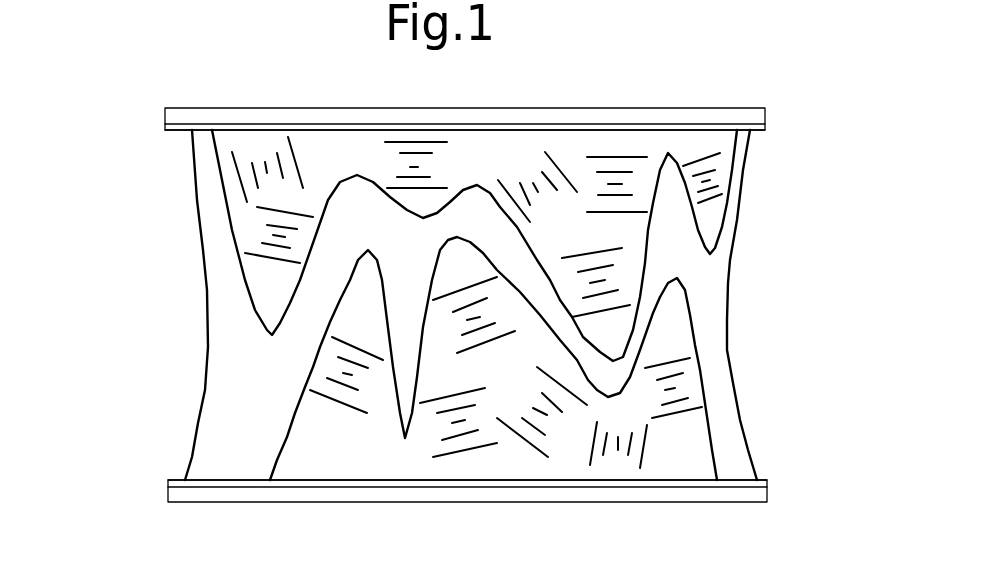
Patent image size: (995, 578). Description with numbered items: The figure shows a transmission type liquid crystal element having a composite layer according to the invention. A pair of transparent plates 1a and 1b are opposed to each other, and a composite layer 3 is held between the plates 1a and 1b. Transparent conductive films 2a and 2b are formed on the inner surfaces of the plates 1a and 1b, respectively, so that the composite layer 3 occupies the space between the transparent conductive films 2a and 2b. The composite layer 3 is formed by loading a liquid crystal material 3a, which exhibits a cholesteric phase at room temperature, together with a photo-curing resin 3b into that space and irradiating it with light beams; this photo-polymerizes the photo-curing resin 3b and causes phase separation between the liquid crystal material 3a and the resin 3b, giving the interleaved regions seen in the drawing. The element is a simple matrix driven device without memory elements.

The transparent plate 1a is at (165, 115).
The transparent conductive film 2a is at (175, 132).
The transparent plate 1b is at (168, 497).
The transparent conductive film 2b is at (168, 480).
The composite layer 3 is at (532, 305).
The liquid crystal material 3a is at (685, 436).
The photo-curing resin 3b is at (715, 344).